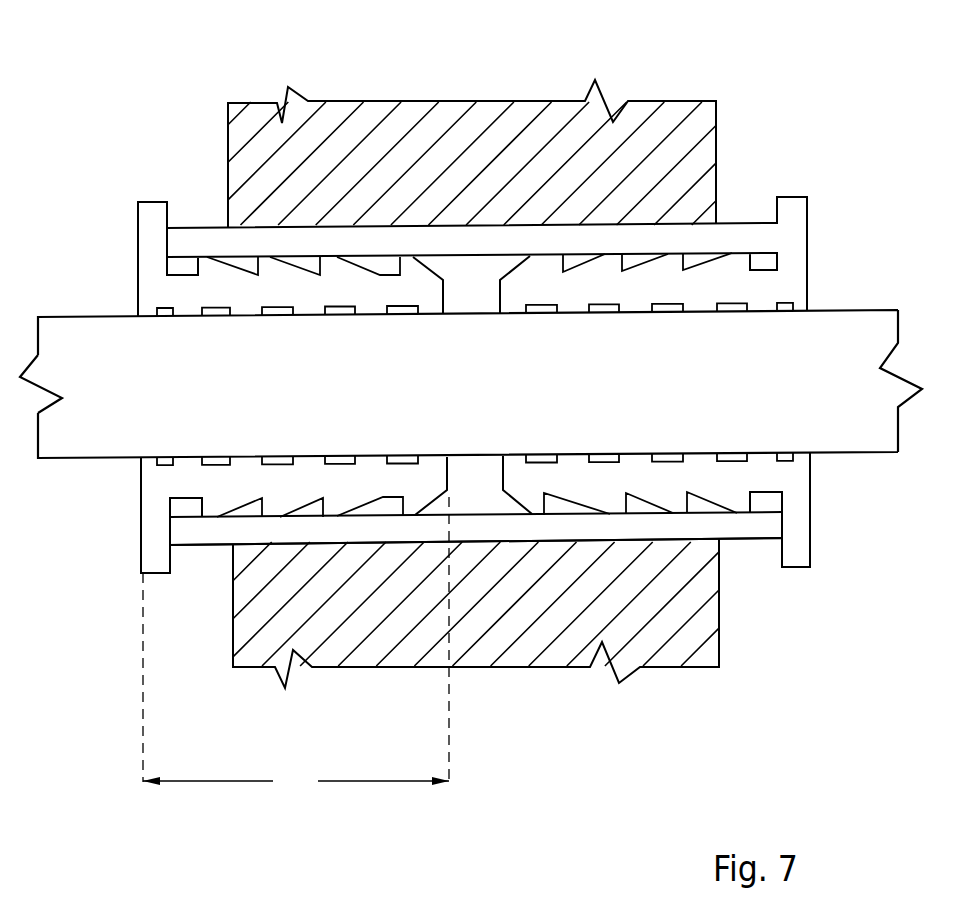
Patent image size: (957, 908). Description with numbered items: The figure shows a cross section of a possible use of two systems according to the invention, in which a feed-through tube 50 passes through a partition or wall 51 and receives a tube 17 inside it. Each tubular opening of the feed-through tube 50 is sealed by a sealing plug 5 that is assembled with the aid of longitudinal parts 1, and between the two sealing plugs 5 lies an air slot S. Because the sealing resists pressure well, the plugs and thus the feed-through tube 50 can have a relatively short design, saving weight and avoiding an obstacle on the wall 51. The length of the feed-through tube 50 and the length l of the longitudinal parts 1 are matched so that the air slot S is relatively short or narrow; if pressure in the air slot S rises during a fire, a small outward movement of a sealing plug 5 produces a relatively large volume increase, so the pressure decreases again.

The tube 17 is at (500, 403).
The wall 51 is at (668, 172).
The sealing plug 5 is at (153, 284).
The air slot S is at (483, 293).
The longitudinal part 1 is at (155, 490).
The feed-through tube 50 is at (202, 530).
The length of the longitudinal parts l is at (311, 646).